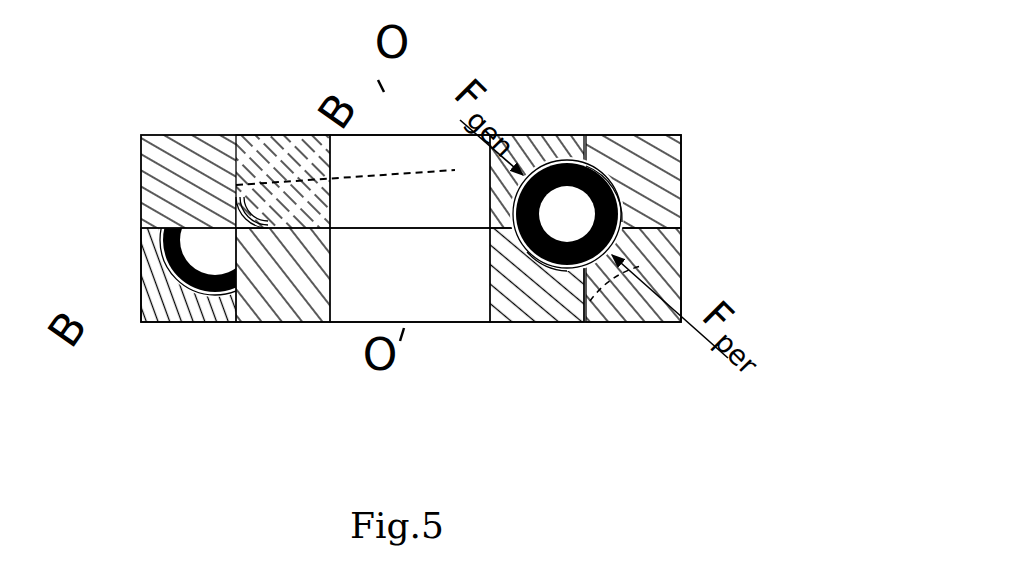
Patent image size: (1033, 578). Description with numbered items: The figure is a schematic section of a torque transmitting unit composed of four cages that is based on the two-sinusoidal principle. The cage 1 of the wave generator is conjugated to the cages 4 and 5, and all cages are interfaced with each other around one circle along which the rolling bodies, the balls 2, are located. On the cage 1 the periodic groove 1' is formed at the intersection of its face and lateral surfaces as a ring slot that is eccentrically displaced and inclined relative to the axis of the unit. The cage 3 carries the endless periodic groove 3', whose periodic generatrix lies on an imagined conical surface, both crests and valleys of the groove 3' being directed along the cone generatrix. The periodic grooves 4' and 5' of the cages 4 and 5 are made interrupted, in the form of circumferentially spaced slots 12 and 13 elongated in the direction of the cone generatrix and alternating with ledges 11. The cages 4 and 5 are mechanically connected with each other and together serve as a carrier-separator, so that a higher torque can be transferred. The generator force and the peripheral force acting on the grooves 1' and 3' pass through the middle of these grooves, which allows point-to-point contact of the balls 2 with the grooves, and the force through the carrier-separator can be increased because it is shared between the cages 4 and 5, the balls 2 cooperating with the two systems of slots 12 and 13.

The cage of the wave generator 1 is at (283, 171).
The periodic groove 1' is at (382, 101).
The balls 2 is at (570, 142).
The slots 12 is at (606, 145).
The cage 4 is at (710, 144).
The periodic groove 4' is at (700, 172).
The cage 3 is at (700, 260).
The periodic groove 3' is at (192, 295).
The ledges 11 is at (252, 232).
The slots 13 is at (490, 333).
The cage 5 is at (537, 321).
The periodic groove 5' is at (600, 341).